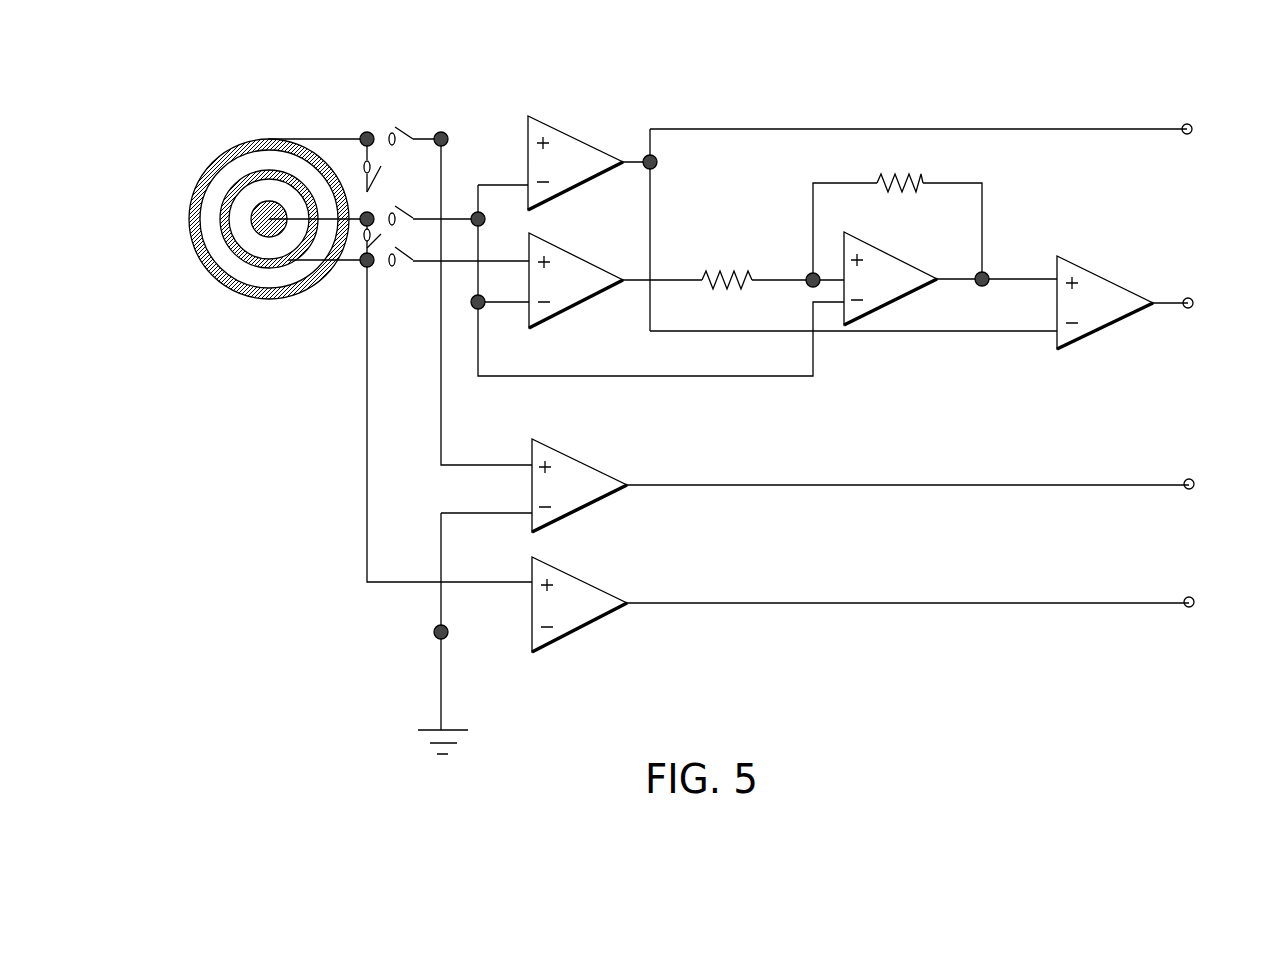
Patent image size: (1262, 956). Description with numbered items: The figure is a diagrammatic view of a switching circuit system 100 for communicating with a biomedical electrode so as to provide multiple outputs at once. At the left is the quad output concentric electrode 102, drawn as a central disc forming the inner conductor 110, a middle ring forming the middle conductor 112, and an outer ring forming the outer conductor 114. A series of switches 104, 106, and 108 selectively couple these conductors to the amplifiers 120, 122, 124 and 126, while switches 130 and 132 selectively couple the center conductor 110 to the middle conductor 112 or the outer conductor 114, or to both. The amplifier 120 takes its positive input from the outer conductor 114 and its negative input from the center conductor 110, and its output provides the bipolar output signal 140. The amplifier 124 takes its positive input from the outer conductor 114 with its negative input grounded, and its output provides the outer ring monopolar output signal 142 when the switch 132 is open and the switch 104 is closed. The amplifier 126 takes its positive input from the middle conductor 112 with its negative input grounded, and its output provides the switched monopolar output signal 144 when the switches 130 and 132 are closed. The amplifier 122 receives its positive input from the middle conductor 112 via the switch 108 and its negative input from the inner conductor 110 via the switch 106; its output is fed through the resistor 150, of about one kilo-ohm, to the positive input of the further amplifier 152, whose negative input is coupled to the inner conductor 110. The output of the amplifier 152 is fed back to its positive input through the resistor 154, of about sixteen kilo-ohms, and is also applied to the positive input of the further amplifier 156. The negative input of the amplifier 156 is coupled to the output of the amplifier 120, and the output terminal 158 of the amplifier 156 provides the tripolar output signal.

The switching circuit system 100 is at (772, 60).
The quad output concentric electrode 102 is at (190, 108).
The switch 104 is at (407, 120).
The switch 106 is at (405, 203).
The switch 108 is at (405, 268).
The inner conductor 110 is at (253, 212).
The middle conductor 112 is at (227, 225).
The outer conductor 114 is at (226, 287).
The amplifier 120 is at (585, 135).
The amplifier 122 is at (586, 256).
The amplifier 124 is at (584, 462).
The amplifier 126 is at (584, 580).
The switch 130 is at (360, 243).
The switch 132 is at (358, 175).
The bipolar output signal 140 is at (1192, 124).
The outer ring monopolar output signal 142 is at (1195, 478).
The switched monopolar output signal 144 is at (1195, 597).
The resistor 150 is at (730, 288).
The amplifier 152 is at (920, 265).
The resistor 154 is at (877, 172).
The amplifier 156 is at (1092, 268).
The output terminal 158 is at (1194, 298).